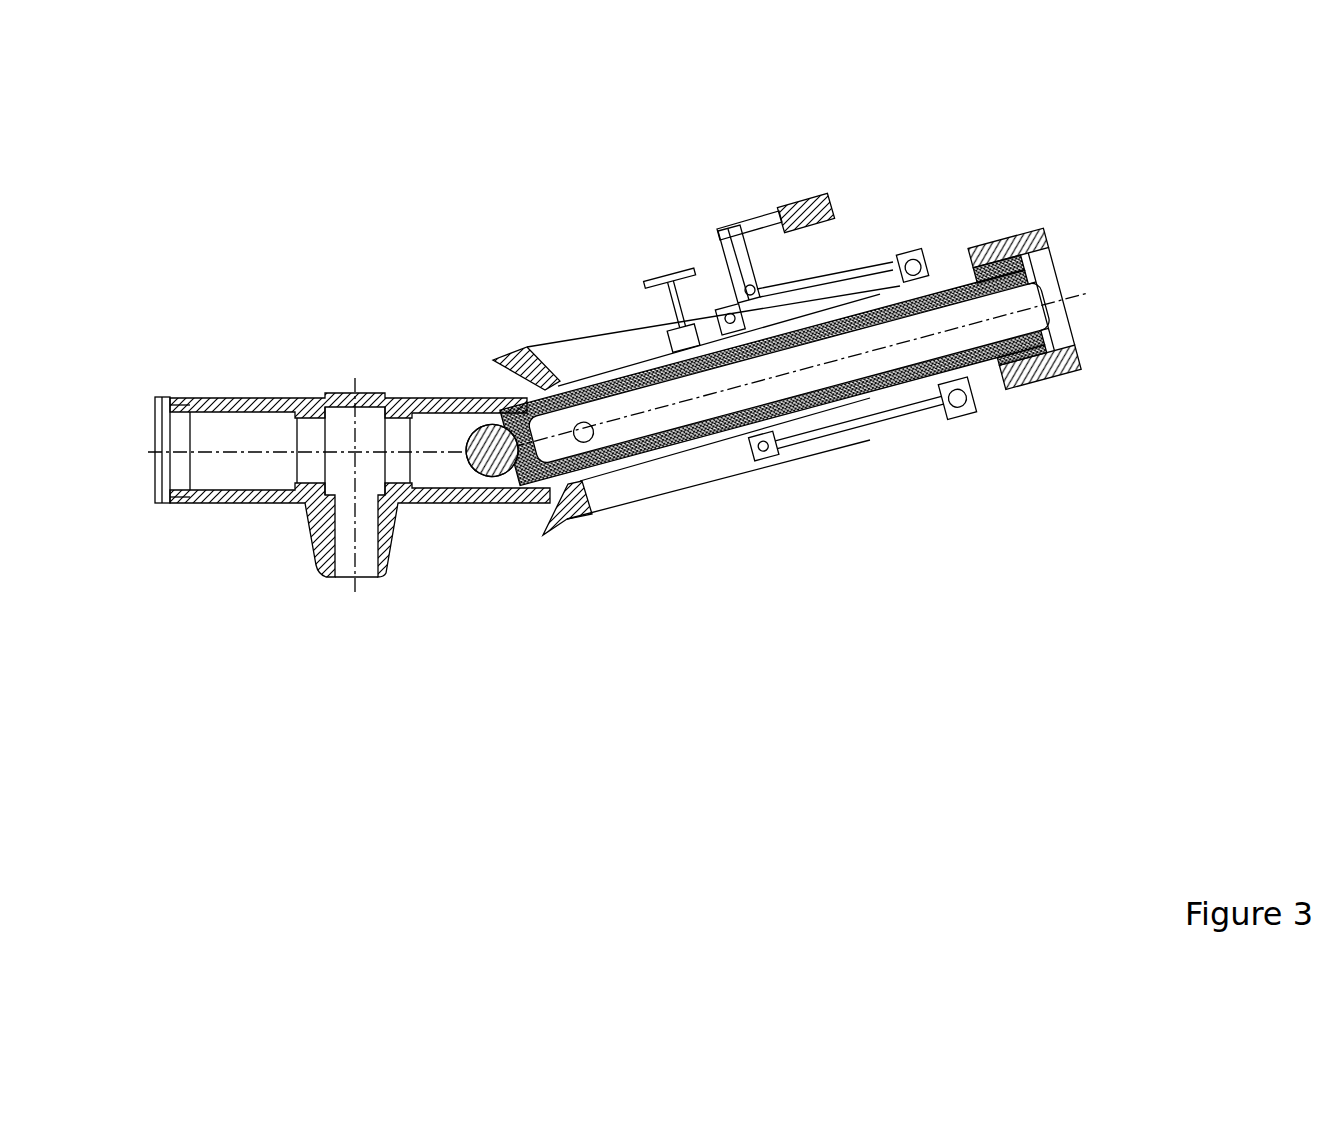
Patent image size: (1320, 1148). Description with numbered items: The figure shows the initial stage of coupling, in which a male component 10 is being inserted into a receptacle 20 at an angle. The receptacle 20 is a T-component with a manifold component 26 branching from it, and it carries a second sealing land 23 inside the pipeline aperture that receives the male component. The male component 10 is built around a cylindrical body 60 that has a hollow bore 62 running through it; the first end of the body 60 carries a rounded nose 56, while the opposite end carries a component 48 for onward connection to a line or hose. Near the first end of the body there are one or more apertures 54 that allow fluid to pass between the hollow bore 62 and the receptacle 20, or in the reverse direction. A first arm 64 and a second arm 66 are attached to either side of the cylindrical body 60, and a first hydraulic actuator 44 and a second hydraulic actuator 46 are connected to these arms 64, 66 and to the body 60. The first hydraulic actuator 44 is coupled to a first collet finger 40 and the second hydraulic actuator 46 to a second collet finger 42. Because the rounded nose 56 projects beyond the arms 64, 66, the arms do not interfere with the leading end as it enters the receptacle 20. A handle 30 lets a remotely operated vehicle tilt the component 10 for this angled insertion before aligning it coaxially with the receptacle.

The male component 10 is at (990, 222).
The receptacle 20 is at (233, 525).
The second sealing land 23 is at (372, 432).
The manifold component 26 is at (398, 543).
The handle 30 is at (806, 196).
The first collet finger 40 is at (696, 317).
The second collet finger 42 is at (706, 589).
The first hydraulic actuator 44 is at (695, 307).
The second hydraulic actuator 46 is at (764, 446).
The component for onward connection 48 is at (1024, 308).
The apertures 54 is at (583, 432).
The rounded nose 56 is at (492, 451).
The cylindrical body 60 is at (799, 366).
The hollow bore 62 is at (1038, 306).
The first arm 64 is at (526, 368).
The second arm 66 is at (571, 537).